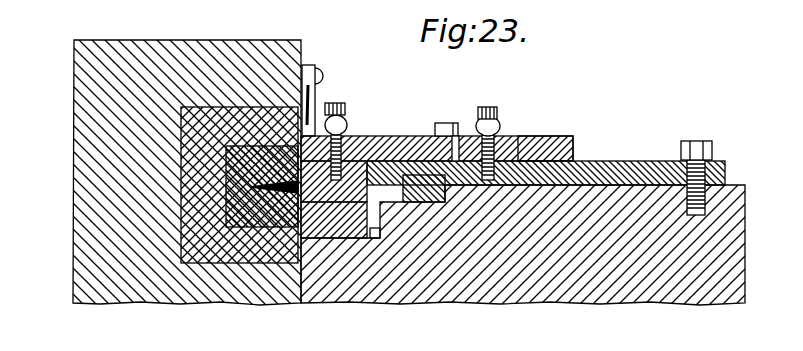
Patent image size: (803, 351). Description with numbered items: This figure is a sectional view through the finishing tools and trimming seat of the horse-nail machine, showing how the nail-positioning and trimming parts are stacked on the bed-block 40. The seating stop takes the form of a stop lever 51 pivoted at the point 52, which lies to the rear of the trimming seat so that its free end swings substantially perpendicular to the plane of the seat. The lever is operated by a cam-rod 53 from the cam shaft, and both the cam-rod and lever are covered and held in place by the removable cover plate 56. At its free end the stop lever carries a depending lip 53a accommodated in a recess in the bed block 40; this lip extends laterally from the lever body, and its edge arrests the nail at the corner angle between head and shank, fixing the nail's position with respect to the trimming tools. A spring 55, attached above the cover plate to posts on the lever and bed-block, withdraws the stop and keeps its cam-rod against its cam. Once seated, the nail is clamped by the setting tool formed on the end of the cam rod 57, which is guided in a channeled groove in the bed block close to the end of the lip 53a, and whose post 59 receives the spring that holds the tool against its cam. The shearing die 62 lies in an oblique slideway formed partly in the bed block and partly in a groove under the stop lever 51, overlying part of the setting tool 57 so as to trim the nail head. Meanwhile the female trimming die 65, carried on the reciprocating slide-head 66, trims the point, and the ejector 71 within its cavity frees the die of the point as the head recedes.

The bed-block 40 is at (575, 285).
The stop lever 51 is at (617, 161).
The pivot point of stop lever 52 is at (700, 143).
The cam-rod 53 is at (518, 139).
The depending lip 53a is at (372, 230).
The spring 55 is at (497, 112).
The cover plate 56 is at (575, 146).
The cam rod of setting tool 57 is at (360, 152).
The post 59 is at (343, 114).
The shearing die 62 is at (437, 205).
The female trimming die 65 is at (237, 198).
The slide-head 66 is at (75, 185).
The ejector 71 is at (287, 190).